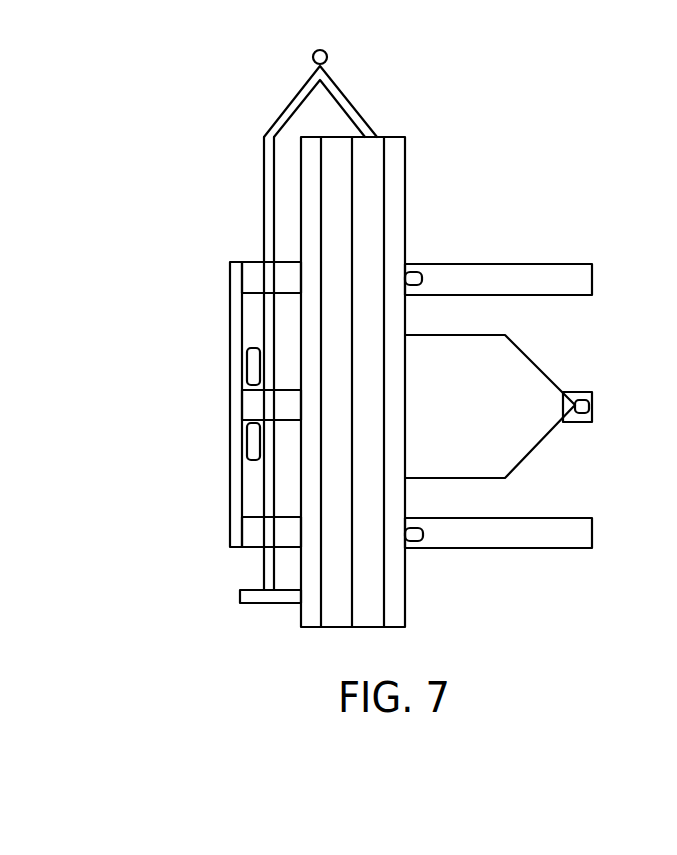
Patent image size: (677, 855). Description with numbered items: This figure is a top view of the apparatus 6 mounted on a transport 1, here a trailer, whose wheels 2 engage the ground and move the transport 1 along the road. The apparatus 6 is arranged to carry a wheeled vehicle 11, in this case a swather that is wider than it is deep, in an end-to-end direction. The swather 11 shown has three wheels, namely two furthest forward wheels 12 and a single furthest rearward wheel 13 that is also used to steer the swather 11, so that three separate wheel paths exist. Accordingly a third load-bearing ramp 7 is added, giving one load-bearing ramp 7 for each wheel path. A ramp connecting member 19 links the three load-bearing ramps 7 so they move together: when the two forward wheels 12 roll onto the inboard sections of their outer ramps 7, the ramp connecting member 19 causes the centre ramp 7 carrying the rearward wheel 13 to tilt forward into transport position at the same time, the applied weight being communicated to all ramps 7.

The transport 1 is at (347, 97).
The wheels 2 is at (248, 362).
The apparatus 6 is at (252, 525).
The load-bearing ramp 7 is at (592, 278).
The wheeled vehicle 11 is at (522, 450).
The furthest forward wheels 12 is at (412, 270).
The furthest rearward wheel 13 is at (590, 392).
The ramp connecting member 19 is at (228, 318).